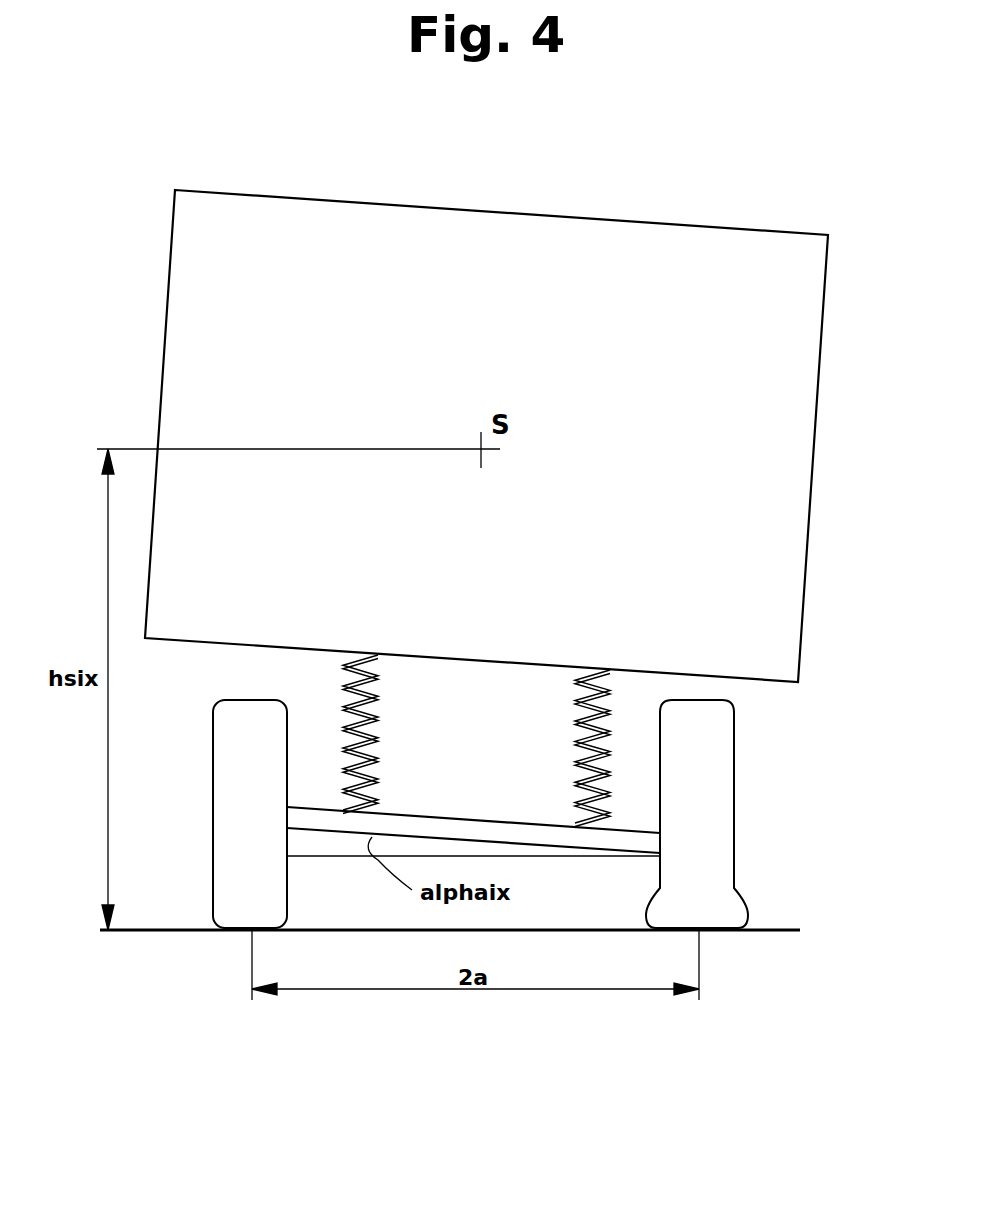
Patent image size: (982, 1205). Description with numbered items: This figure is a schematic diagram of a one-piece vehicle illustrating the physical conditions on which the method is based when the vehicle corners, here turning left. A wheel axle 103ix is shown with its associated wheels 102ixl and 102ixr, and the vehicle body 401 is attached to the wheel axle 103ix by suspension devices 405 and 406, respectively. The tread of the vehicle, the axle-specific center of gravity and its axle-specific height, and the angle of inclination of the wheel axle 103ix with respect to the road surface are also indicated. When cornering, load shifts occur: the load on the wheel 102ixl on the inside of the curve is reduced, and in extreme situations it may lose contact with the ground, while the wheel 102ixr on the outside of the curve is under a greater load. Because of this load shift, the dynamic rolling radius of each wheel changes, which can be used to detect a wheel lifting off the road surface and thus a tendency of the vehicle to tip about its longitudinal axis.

The vehicle body 401 is at (785, 486).
The wheel 102ixl is at (222, 798).
The wheel 102ixr is at (722, 800).
The wheel axle 103ix is at (447, 828).
The suspension device 405 is at (372, 710).
The suspension device 406 is at (578, 755).